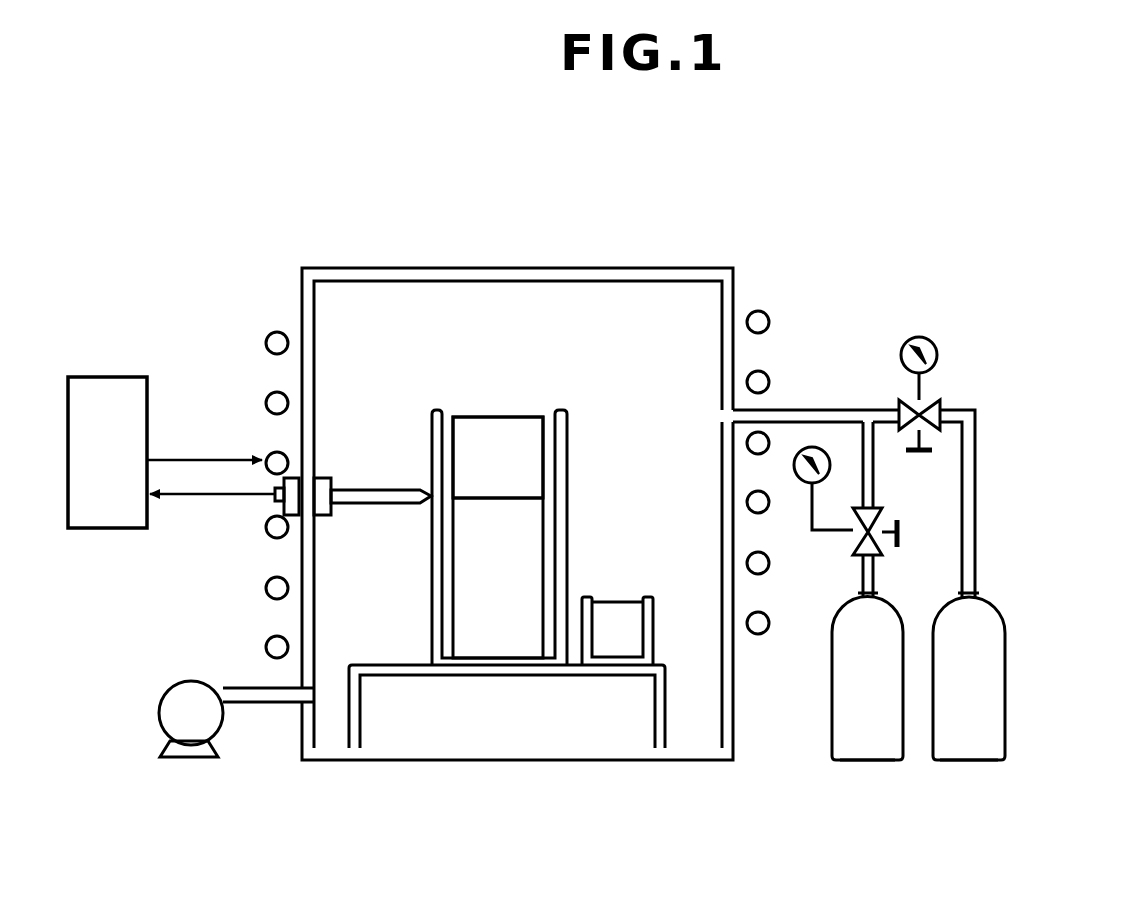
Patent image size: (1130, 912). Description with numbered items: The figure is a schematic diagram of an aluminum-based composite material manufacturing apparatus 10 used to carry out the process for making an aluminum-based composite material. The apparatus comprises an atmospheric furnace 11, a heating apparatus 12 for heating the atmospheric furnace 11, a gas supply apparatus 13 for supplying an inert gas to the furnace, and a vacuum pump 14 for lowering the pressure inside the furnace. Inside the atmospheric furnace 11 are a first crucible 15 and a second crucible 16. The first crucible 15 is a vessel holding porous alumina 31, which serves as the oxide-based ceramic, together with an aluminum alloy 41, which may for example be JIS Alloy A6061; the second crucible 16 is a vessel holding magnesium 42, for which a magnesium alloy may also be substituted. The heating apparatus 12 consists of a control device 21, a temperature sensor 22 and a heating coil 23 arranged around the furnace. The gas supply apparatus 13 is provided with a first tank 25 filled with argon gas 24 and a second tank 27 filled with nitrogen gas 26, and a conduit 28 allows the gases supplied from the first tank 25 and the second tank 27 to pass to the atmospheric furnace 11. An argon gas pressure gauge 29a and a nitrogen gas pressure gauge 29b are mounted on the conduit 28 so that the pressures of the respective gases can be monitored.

The aluminum-based composite material manufacturing apparatus 10 is at (840, 176).
The atmospheric furnace 11 is at (413, 260).
The heating apparatus 12 is at (268, 266).
The gas supply apparatus 13 is at (895, 295).
The vacuum pump 14 is at (159, 702).
The first crucible 15 is at (433, 615).
The second crucible 16 is at (653, 628).
The control device 21 is at (110, 377).
The temperature sensor 22 is at (352, 492).
The heating coil 23 is at (267, 336).
The argon gas 24 is at (977, 626).
The first tank 25 is at (972, 762).
The nitrogen gas 26 is at (862, 724).
The second tank 27 is at (877, 762).
The conduit 28 is at (800, 410).
The argon gas pressure gauge 29a is at (938, 352).
The nitrogen gas pressure gauge 29b is at (803, 485).
The porous alumina 31 is at (498, 612).
The aluminum alloy 41 is at (489, 432).
The magnesium 42 is at (622, 632).